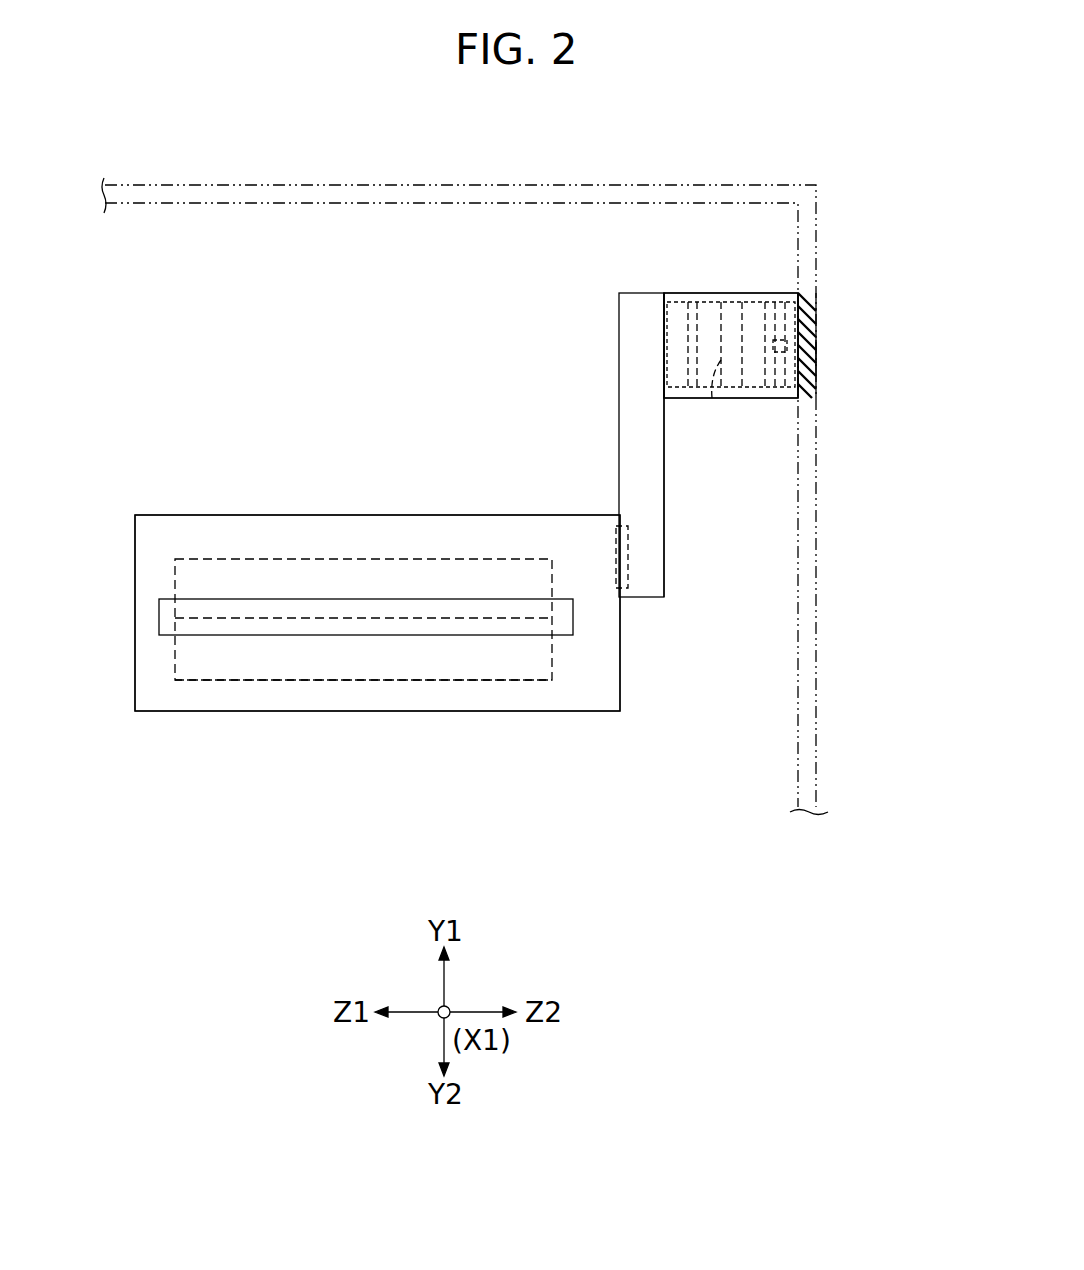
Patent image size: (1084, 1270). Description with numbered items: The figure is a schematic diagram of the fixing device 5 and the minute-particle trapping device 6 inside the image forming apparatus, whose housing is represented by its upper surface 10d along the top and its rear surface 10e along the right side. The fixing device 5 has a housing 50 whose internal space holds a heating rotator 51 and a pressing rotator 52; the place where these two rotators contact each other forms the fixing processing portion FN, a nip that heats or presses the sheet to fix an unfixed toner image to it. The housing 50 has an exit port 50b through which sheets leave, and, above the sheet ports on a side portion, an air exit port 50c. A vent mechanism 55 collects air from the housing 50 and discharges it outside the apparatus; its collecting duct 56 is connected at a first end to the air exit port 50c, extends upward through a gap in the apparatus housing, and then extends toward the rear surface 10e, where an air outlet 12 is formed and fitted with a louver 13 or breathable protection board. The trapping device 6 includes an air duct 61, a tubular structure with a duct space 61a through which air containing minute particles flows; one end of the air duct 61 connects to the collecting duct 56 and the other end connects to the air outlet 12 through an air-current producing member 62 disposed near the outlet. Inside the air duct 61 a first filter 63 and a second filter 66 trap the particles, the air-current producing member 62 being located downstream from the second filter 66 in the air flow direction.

The upper surface 10d is at (385, 183).
The rear surface 10e is at (820, 628).
The air outlet 12 is at (806, 292).
The louver 13 is at (818, 356).
The fixing device 5 is at (180, 504).
The housing 50 is at (200, 712).
The exit port 50b is at (159, 626).
The air exit port 50c is at (627, 558).
The heating rotator 51 is at (322, 557).
The pressing rotator 52 is at (333, 681).
The fixing processing portion FN is at (426, 622).
The vent mechanism 55 is at (600, 439).
The collecting duct 56 is at (664, 483).
The trapping device 6 is at (728, 282).
The air duct 61 is at (697, 292).
The duct space 61a is at (675, 323).
The air-current producing member 62 is at (755, 292).
The first filter 63 is at (686, 356).
The second filter 66 is at (712, 398).